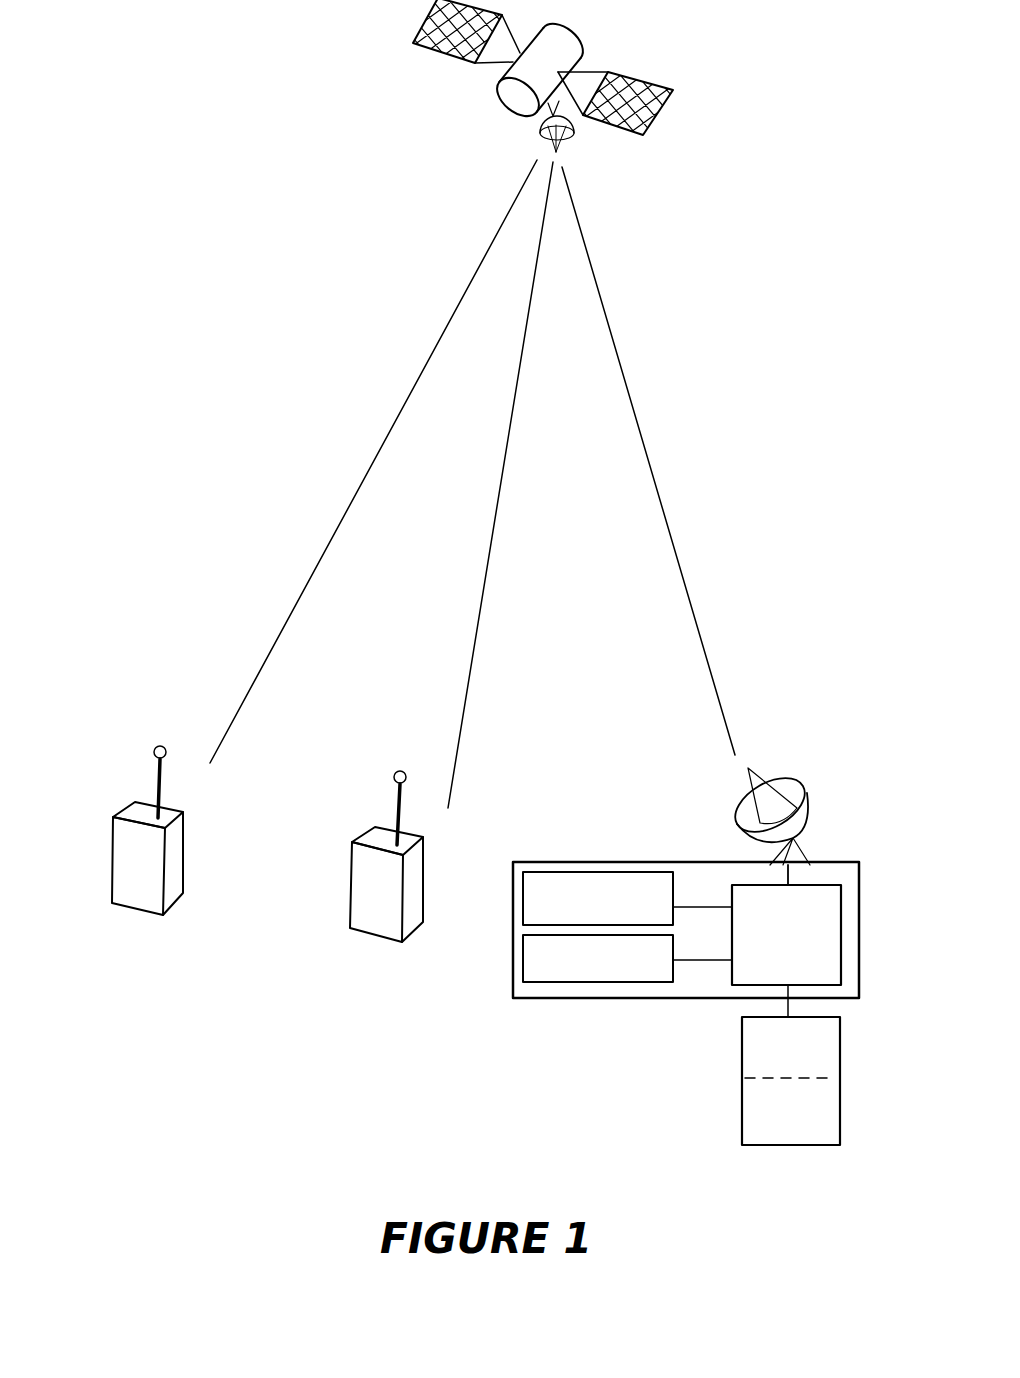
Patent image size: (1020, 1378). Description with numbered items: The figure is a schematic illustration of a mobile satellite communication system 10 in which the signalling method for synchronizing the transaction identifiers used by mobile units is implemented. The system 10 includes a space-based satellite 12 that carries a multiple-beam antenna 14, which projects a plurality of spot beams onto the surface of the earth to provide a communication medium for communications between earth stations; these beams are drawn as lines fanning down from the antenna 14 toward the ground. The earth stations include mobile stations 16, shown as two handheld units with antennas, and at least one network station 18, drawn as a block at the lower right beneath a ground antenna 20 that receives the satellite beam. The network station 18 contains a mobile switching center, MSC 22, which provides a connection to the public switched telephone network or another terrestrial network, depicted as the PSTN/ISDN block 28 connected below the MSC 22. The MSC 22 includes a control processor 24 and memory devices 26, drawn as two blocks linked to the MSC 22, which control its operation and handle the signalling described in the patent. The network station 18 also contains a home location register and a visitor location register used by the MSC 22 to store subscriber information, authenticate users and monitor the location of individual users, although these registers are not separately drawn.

The satellite communication system 10 is at (738, 337).
The space-based satellite 12 is at (572, 33).
The multiple-beam antenna 14 is at (533, 140).
The mobile stations 16 is at (112, 863).
The network station 18 is at (860, 912).
The ground station antenna 20 is at (807, 785).
The mobile switching center 22 is at (842, 958).
The control processor 24 is at (612, 873).
The memory devices 26 is at (618, 982).
The PSTN/ISDN network 28 is at (842, 1052).